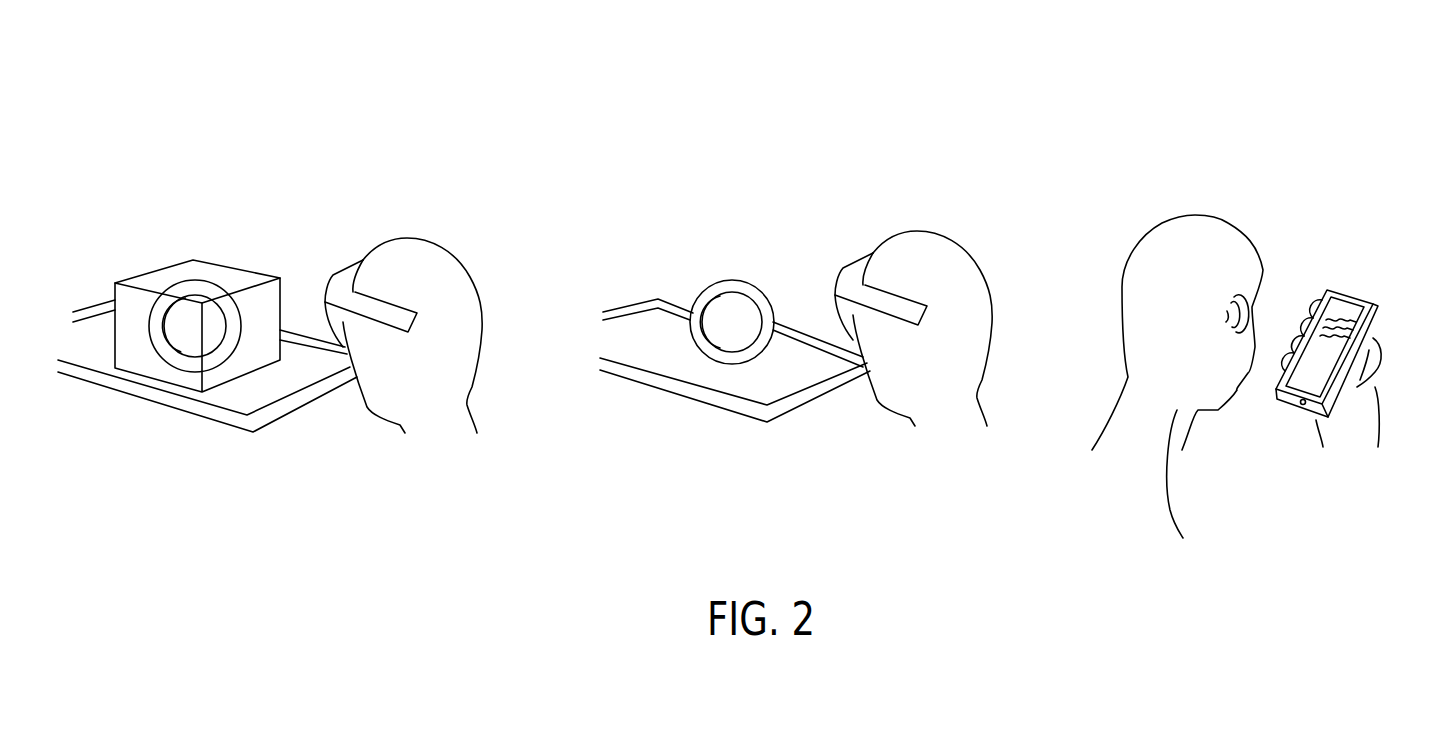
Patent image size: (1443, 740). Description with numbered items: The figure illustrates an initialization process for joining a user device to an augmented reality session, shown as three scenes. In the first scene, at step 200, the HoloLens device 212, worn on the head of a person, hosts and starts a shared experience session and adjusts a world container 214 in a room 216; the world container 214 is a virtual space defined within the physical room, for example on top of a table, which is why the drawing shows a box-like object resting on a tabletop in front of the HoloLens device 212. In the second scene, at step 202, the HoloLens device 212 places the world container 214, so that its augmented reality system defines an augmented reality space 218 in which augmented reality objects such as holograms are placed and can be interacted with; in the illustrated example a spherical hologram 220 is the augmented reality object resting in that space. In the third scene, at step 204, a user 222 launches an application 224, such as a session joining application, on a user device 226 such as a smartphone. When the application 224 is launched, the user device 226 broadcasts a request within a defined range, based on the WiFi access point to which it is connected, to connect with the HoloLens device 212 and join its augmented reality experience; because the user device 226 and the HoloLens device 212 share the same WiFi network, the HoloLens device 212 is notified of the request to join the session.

The world container adjusting step 200 is at (200, 218).
The world container placing step 202 is at (803, 186).
The application launching step 204 is at (1279, 175).
The HoloLens device 212 is at (360, 262).
The world container 214 is at (145, 392).
The room 216 is at (89, 233).
The augmented reality space 218 is at (788, 383).
The spherical hologram 220 is at (192, 300).
The user 222 is at (1177, 387).
The application 224 is at (1357, 320).
The user device 226 is at (1361, 292).